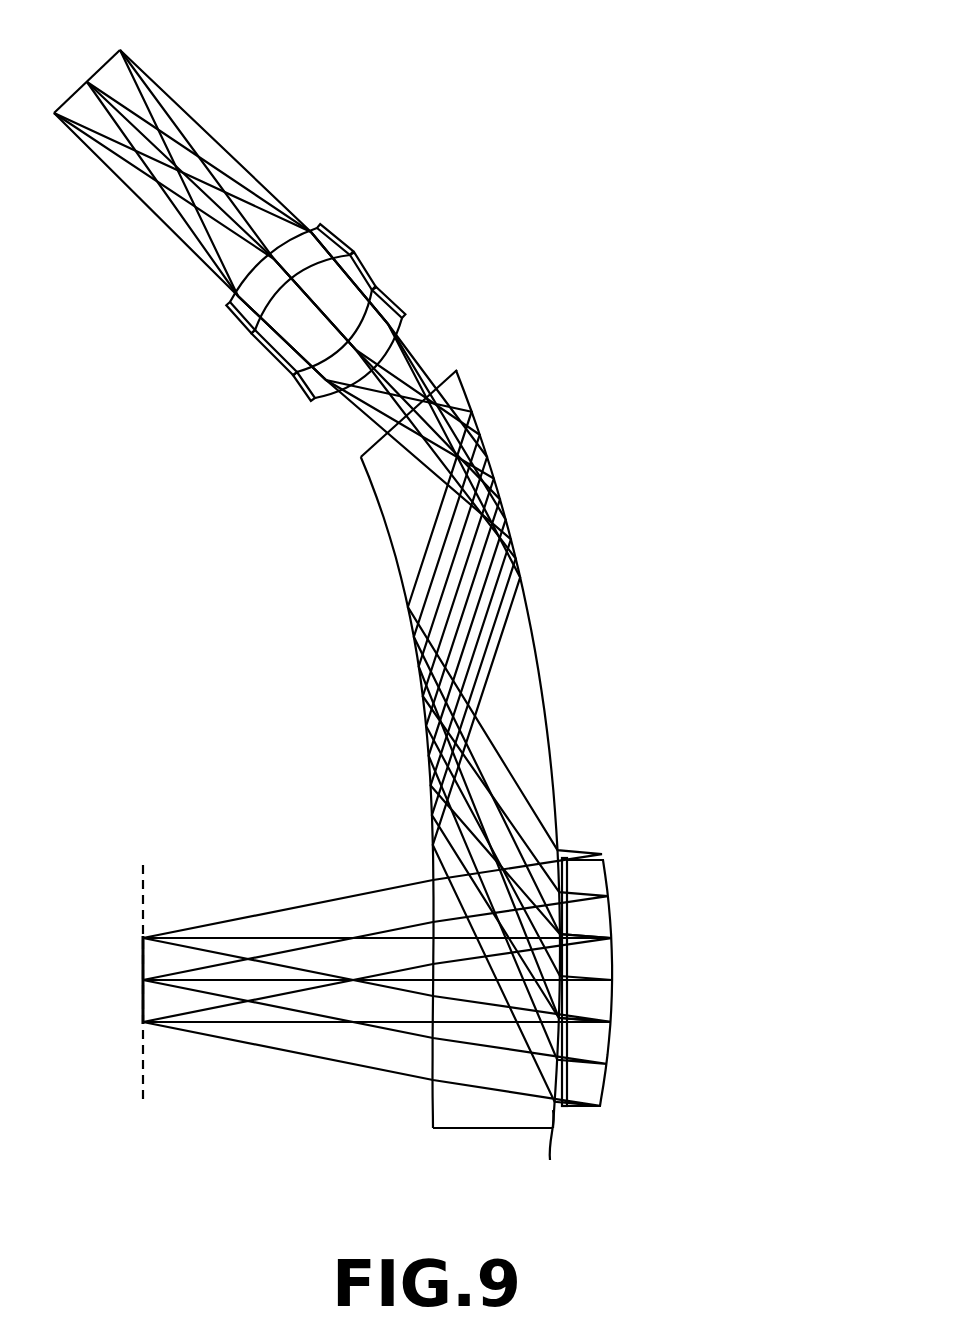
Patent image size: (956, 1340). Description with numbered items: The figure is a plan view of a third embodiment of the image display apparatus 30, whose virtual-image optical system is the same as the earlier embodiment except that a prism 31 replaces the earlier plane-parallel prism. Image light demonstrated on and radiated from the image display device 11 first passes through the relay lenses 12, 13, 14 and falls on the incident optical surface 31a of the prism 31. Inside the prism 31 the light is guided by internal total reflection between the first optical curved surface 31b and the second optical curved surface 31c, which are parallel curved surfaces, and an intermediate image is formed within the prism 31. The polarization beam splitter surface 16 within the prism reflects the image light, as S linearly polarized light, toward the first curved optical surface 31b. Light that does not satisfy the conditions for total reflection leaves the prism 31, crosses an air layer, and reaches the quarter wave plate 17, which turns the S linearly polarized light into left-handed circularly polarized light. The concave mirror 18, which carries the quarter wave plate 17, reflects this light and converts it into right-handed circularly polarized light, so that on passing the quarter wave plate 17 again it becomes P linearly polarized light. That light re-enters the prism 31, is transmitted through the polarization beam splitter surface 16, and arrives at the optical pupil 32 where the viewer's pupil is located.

The image display device 11 is at (88, 82).
The relay lens 12 is at (318, 232).
The relay lens 13 is at (334, 283).
The relay lens 14 is at (380, 330).
The polarization beam splitter surface 16 is at (507, 1037).
The quarter wave plate 17 is at (566, 857).
The concave mirror 18 is at (593, 968).
The image display apparatus 30 is at (549, 178).
The prism 31 is at (570, 475).
The incident optical surface 31a is at (457, 370).
The first optical curved surface 31b is at (526, 582).
The second optical curved surface 31c is at (410, 650).
The optical pupil 32 is at (147, 862).